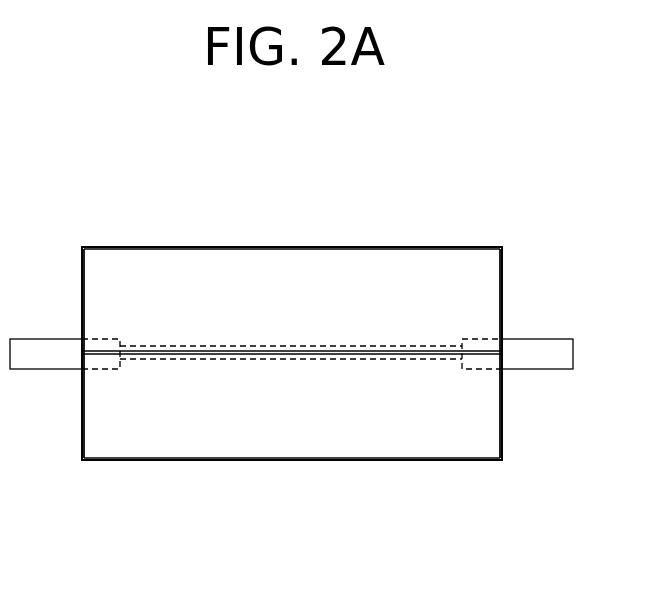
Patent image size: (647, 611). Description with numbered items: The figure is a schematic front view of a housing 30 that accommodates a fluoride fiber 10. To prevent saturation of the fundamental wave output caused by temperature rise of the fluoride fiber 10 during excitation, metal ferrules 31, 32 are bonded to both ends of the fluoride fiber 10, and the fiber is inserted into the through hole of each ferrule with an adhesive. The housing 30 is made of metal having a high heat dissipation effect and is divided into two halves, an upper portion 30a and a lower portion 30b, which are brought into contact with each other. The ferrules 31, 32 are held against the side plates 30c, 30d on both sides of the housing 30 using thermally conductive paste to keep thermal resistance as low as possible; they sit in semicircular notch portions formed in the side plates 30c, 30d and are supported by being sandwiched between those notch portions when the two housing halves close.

The fluoride fiber 10 is at (286, 360).
The housing 30 is at (390, 238).
The upper portion 30a is at (434, 275).
The lower portion 30b is at (455, 440).
The side plate 30c is at (82, 275).
The side plate 30d is at (82, 418).
The ferrule 31 is at (546, 370).
The ferrule 32 is at (45, 337).